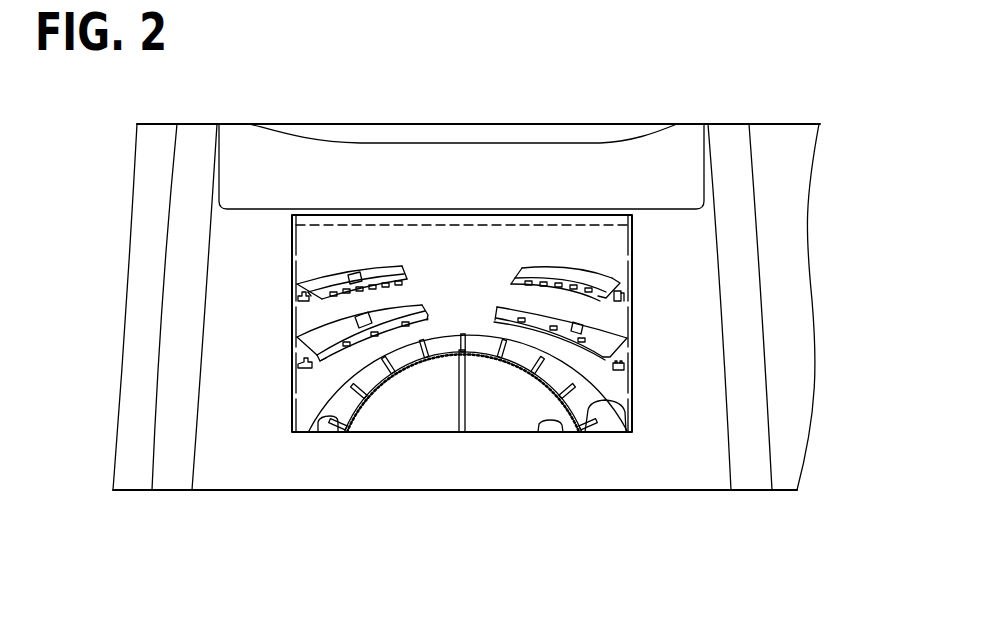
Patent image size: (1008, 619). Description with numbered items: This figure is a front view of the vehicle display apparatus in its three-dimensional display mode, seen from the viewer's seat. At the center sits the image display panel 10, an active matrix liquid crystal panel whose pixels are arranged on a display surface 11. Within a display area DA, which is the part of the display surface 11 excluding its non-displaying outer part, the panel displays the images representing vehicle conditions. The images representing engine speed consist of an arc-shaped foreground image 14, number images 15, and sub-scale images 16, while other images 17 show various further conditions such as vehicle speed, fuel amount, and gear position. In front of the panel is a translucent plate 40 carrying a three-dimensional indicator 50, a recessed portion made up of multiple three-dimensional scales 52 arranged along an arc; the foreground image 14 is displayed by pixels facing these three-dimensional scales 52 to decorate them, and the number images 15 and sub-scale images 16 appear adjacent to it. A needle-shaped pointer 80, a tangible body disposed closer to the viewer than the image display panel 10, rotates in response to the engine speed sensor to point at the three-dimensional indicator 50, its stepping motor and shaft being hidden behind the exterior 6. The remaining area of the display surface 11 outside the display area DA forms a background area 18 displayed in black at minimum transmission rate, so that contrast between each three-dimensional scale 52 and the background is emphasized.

The exterior 6 is at (228, 457).
The image display panel 10 is at (461, 142).
The display surface 11 is at (440, 214).
The foreground image 14 is at (622, 432).
The number images 15 is at (538, 432).
The sub-scale images 16 is at (584, 432).
The other images 17 is at (340, 273).
The background area 18 is at (312, 407).
The translucent plate 40 is at (442, 466).
The three-dimensional indicator 50 is at (442, 466).
The three-dimensional scales 52 is at (318, 432).
The pointer 80 is at (459, 414).
The display area DA is at (358, 225).